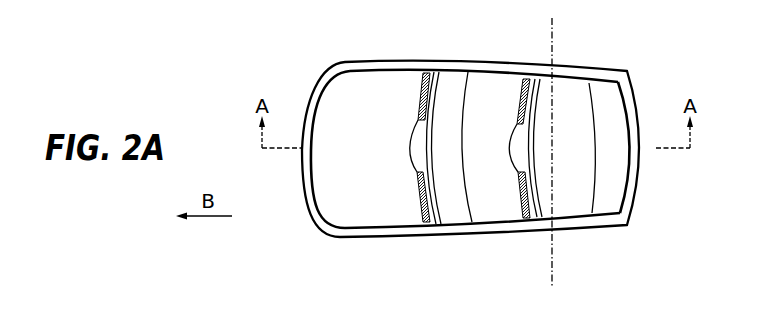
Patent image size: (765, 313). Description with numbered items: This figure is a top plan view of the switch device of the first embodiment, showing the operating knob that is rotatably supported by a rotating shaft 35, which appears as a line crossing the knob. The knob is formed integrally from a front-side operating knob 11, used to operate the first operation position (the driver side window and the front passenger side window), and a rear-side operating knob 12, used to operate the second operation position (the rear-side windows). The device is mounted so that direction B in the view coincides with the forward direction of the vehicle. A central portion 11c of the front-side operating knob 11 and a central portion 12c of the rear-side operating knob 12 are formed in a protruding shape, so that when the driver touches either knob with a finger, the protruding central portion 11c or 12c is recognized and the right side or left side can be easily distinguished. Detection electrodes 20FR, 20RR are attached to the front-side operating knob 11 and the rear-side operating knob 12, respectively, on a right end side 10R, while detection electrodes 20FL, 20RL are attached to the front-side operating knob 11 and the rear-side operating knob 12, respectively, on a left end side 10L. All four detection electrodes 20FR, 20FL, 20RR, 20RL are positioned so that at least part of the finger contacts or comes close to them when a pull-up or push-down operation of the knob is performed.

The right end side 10R is at (422, 68).
The left end side 10L is at (423, 222).
The detection electrode 20FR is at (422, 102).
The detection electrode 20FL is at (421, 198).
The detection electrode 20RR is at (527, 81).
The detection electrode 20RL is at (522, 218).
The front-side operating knob 11 is at (455, 205).
The central portion 11c is at (408, 148).
The rear-side operating knob 12 is at (565, 203).
The central portion 12c is at (510, 148).
The rotating shaft 35 is at (554, 42).